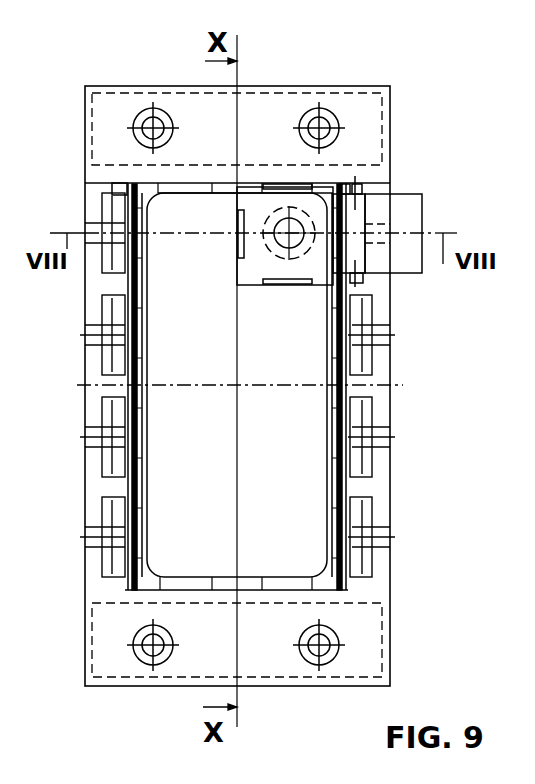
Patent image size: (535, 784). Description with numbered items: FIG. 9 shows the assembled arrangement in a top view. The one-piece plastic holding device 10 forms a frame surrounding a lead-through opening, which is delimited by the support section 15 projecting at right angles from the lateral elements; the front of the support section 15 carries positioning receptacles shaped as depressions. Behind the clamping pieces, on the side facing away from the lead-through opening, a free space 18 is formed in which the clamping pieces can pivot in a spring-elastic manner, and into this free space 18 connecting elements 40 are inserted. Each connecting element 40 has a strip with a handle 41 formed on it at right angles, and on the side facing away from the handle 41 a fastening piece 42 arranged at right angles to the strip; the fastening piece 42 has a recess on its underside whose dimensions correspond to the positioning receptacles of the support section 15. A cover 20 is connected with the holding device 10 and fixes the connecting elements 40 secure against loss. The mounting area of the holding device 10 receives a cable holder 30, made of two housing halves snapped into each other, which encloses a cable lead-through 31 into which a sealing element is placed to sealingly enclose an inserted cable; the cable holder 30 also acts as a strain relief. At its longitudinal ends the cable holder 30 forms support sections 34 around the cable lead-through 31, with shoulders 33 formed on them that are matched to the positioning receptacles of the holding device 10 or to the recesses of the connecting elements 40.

The holding device 10 is at (82, 400).
The support section 15 is at (140, 333).
The free space 18 is at (113, 207).
The cover 20 is at (103, 103).
The cable holder 30 is at (247, 273).
The cable lead-through 31 is at (279, 242).
The shoulder 33 is at (240, 223).
The support section 34 is at (335, 185).
The connecting element 40 is at (394, 230).
The handle 41 is at (408, 214).
The fastening piece 42 is at (340, 258).